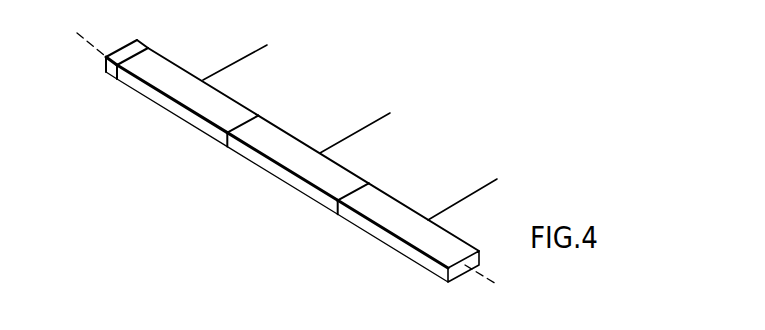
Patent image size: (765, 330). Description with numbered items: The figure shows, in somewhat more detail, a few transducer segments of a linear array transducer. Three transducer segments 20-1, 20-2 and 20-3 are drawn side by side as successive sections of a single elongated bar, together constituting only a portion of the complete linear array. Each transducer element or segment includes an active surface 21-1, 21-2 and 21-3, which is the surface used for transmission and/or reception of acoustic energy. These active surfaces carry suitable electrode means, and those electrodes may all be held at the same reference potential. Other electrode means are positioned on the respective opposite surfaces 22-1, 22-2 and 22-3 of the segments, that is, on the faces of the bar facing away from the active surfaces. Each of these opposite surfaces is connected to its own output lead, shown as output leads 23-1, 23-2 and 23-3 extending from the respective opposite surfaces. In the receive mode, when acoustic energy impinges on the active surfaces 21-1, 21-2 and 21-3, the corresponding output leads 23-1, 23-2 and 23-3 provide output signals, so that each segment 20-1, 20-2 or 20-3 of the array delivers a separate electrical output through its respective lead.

The transducer segment 20-1 is at (173, 93).
The transducer segment 20-2 is at (273, 161).
The transducer segment 20-3 is at (387, 228).
The active surface 21-1 is at (181, 110).
The active surface 21-2 is at (288, 177).
The active surface 21-3 is at (393, 242).
The opposite surface 22-1 is at (173, 62).
The opposite surface 22-2 is at (287, 132).
The opposite surface 22-3 is at (397, 199).
The output lead 23-1 is at (248, 56).
The output lead 23-2 is at (367, 125).
The output lead 23-3 is at (477, 191).